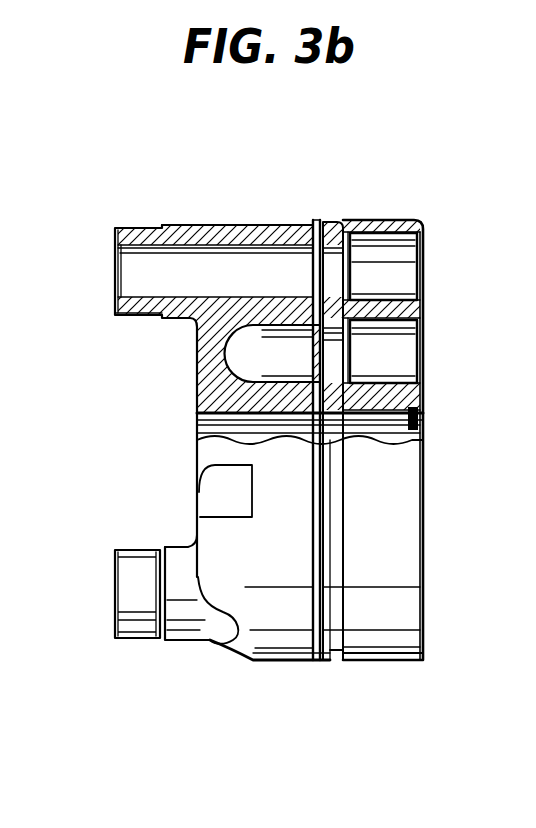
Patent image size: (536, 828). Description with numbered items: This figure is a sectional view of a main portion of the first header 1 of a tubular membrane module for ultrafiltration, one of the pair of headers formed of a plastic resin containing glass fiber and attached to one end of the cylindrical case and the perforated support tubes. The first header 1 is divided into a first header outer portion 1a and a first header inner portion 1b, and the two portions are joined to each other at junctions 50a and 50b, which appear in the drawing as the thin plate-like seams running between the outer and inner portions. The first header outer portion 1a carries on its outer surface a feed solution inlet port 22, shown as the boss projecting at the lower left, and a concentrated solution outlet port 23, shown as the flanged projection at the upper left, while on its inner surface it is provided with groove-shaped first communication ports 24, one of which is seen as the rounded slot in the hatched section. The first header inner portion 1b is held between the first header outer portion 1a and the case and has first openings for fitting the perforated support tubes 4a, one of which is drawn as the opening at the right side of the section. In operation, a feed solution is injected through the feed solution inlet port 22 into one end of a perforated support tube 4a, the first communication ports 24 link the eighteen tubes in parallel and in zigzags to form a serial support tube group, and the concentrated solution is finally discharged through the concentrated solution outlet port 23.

The first header 1 is at (432, 439).
The first header outer portion 1a is at (280, 650).
The first header inner portion 1b is at (375, 638).
The perforated support tube 4a is at (400, 272).
The feed solution inlet port 22 is at (117, 620).
The concentrated solution outlet port 23 is at (118, 262).
The first communication port 24 is at (228, 343).
The junction 50a is at (337, 266).
The junction 50b is at (306, 258).